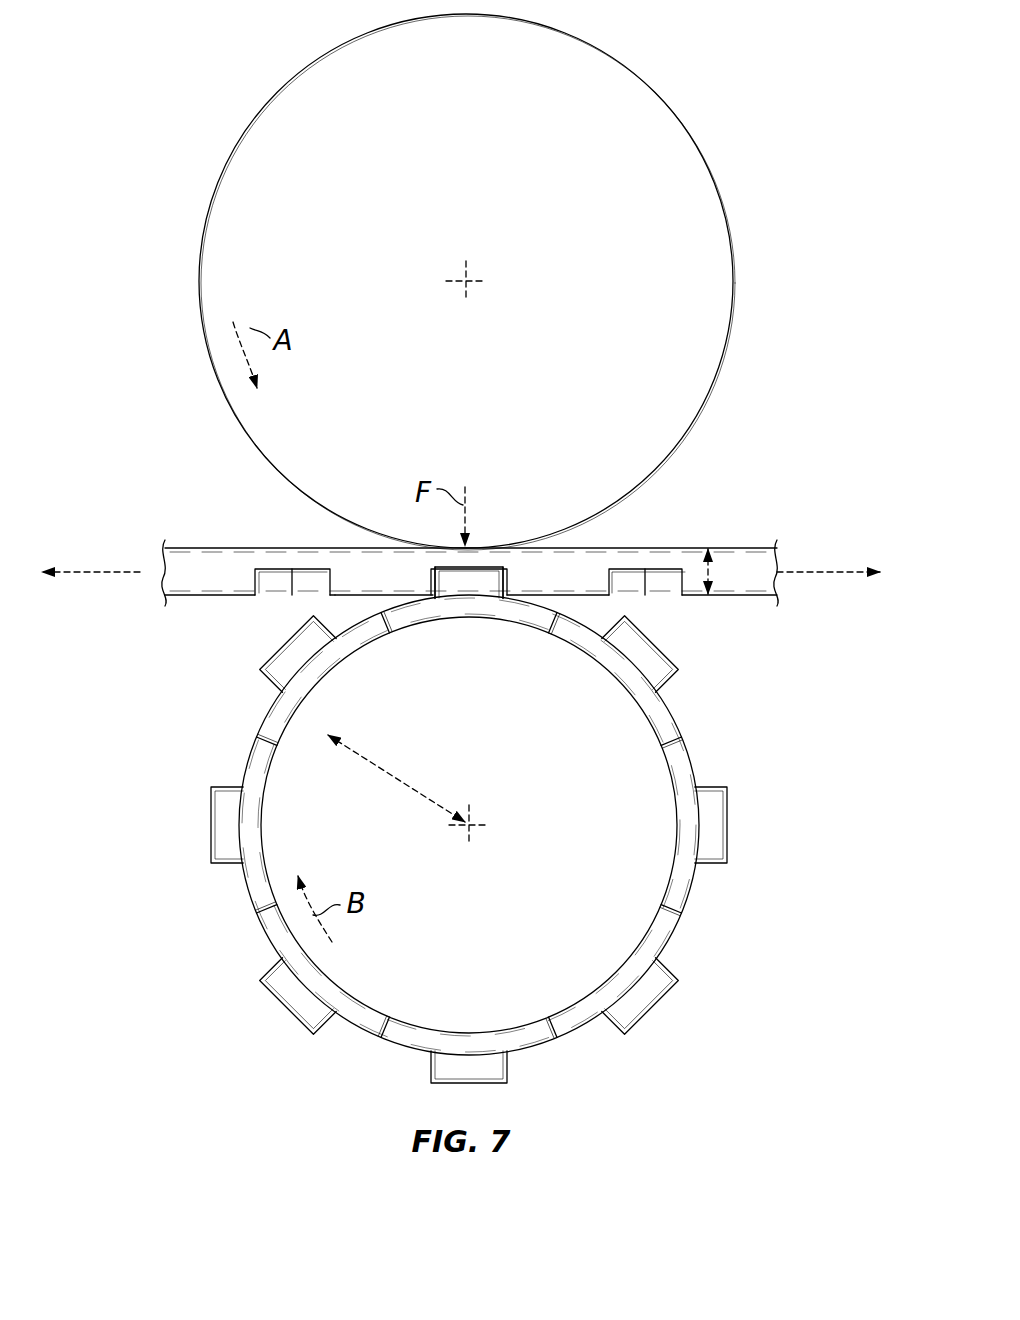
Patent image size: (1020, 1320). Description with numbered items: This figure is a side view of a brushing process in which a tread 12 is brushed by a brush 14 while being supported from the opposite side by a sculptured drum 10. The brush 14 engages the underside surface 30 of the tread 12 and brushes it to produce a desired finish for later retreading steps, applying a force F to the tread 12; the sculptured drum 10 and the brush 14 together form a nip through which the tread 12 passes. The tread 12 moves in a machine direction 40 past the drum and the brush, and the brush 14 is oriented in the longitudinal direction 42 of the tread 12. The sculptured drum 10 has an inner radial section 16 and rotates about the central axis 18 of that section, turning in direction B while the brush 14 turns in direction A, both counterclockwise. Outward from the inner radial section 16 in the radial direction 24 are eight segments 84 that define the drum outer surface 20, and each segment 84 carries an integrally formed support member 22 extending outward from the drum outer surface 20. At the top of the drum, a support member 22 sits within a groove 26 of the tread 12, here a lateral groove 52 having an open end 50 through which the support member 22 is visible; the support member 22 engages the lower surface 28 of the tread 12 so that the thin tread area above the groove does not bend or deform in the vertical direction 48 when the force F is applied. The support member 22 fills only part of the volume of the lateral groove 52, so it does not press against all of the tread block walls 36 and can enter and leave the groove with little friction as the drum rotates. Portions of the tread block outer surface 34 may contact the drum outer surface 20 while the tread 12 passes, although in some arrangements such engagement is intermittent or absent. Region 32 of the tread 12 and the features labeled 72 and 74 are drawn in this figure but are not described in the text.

The sculptured drum 10 is at (660, 934).
The tread 12 is at (765, 546).
The brush 14 is at (660, 140).
The inner radial section 16 is at (643, 782).
The central axis 18 is at (473, 828).
The drum outer surface 20 is at (240, 753).
The support member 22 is at (470, 580).
The radial direction 24 is at (398, 778).
The groove 26 is at (507, 568).
The lower surface 28 is at (265, 577).
The underside surface 30 is at (648, 546).
The strip segment 32 is at (386, 586).
The tread block outer surface 34 is at (711, 598).
The tread block walls 36 is at (619, 581).
The machine direction 40 is at (826, 572).
The longitudinal direction 42 is at (102, 572).
The vertical direction 48 is at (710, 560).
The open end 50 is at (433, 586).
The lateral groove 52 is at (312, 577).
The pocket wall 72 is at (607, 582).
The tab side wall 74 is at (505, 593).
The segment 84 is at (408, 1032).